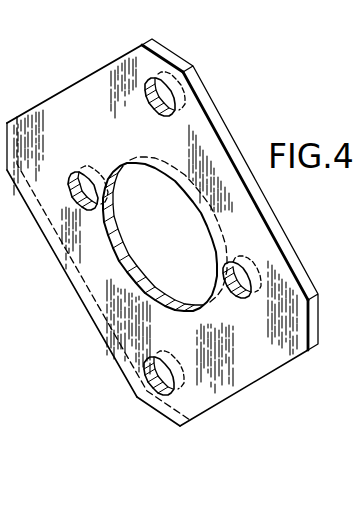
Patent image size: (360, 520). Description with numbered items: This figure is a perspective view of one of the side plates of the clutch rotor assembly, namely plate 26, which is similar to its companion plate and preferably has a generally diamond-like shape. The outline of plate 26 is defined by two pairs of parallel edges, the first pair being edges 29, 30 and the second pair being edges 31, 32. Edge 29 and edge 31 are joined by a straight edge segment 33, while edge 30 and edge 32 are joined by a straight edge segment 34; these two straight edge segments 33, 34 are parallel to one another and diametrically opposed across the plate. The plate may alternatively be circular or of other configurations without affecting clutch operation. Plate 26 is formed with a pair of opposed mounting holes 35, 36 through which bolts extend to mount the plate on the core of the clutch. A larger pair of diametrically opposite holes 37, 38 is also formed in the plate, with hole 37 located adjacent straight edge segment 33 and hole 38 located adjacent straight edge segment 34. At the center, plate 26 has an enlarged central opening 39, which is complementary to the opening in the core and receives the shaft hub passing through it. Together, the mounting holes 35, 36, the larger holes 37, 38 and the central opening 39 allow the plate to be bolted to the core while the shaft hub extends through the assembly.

The plate 26 is at (162, 241).
The edge 29 is at (94, 326).
The edge 30 is at (215, 125).
The edge 31 is at (281, 367).
The edge 32 is at (97, 68).
The straight edge segment 33 is at (155, 411).
The straight edge segment 34 is at (155, 52).
The mounting hole 35 is at (89, 186).
The mounting hole 36 is at (238, 297).
The hole 37 is at (148, 382).
The hole 38 is at (148, 108).
The central opening 39 is at (118, 262).